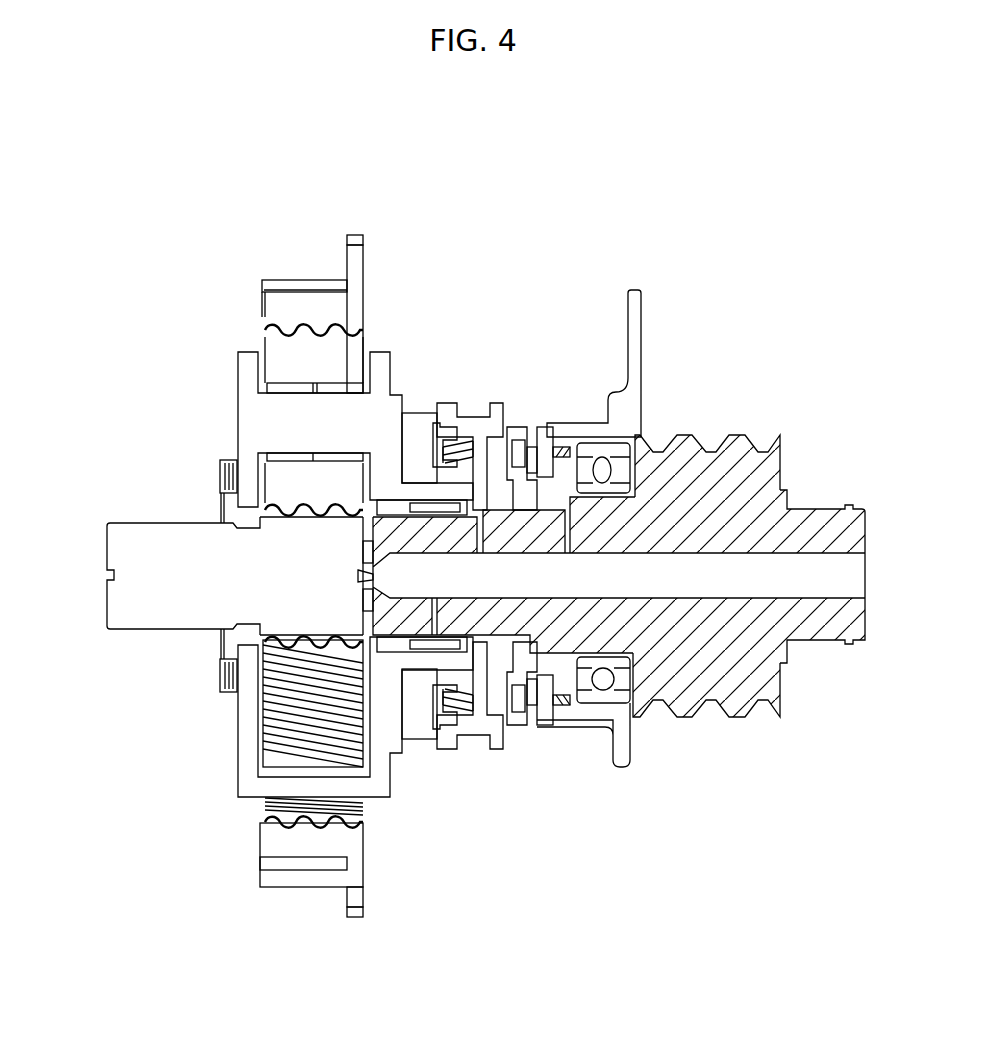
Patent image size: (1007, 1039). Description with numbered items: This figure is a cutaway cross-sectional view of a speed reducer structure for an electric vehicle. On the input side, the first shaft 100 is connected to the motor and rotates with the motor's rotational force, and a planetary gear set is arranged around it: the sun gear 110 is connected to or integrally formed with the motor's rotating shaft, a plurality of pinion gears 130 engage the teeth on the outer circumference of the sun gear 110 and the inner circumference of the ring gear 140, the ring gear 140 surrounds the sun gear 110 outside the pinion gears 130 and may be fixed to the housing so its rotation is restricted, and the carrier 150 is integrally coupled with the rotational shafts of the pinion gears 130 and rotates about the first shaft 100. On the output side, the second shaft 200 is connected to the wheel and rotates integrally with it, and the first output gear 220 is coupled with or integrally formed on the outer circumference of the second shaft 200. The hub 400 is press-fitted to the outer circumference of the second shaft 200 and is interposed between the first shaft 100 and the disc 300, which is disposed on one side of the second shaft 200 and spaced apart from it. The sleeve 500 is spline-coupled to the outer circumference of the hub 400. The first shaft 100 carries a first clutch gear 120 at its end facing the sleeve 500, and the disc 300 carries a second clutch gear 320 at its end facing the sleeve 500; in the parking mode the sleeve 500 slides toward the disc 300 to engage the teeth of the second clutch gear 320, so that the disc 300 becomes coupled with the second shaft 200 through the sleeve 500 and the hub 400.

The first shaft 100 is at (413, 425).
The sun gear 110 is at (292, 520).
The first clutch gear 120 is at (448, 420).
The pinion gears 130 is at (283, 350).
The ring gear 140 is at (298, 303).
The carrier 150 is at (247, 423).
The second shaft 200 is at (827, 513).
The first output gear 220 is at (735, 437).
The disc 300 is at (638, 317).
The second clutch gear 320 is at (545, 433).
The hub 400 is at (507, 440).
The sleeve 500 is at (477, 420).